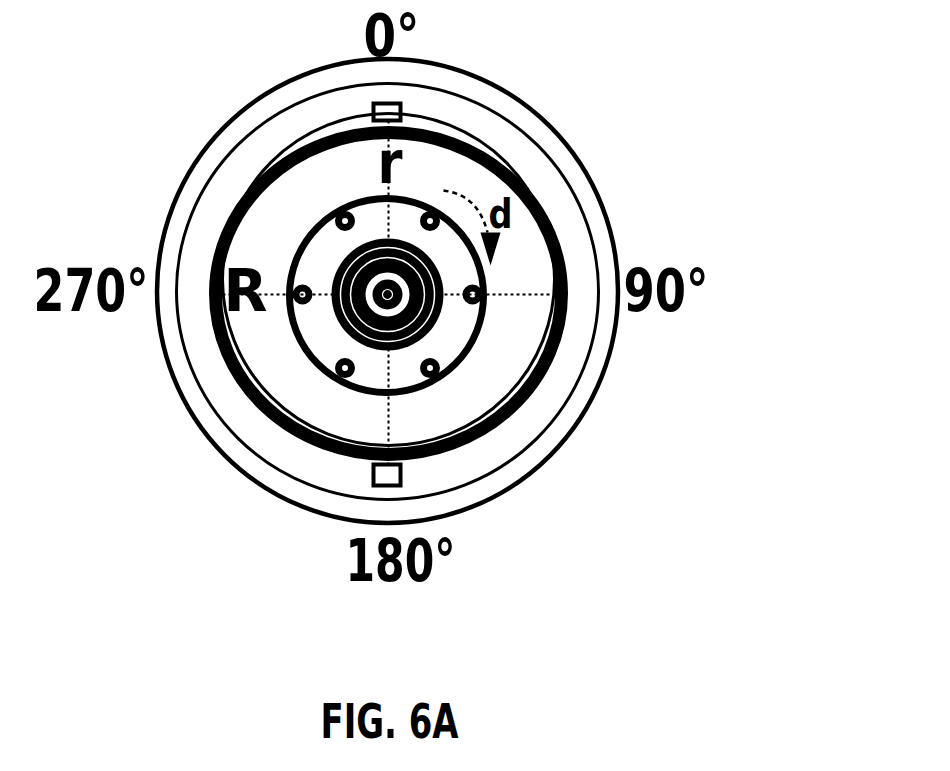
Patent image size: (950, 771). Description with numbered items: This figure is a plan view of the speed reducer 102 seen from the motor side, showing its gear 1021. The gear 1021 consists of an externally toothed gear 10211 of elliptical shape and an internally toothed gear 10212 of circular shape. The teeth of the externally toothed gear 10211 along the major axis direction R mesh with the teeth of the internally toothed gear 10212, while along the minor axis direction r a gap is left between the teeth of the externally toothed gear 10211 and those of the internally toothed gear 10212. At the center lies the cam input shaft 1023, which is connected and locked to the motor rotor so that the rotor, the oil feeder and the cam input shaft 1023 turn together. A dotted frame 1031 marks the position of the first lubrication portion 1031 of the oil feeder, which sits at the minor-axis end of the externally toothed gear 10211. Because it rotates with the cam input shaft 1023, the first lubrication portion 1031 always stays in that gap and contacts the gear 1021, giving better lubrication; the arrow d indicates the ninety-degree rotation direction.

The speed reducer 102 is at (210, 60).
The gear 1021 is at (568, 267).
The externally toothed gear 10211 is at (477, 137).
The internally toothed gear 10212 is at (423, 113).
The cam input shaft 1023 is at (507, 343).
The first lubrication portion 1031 is at (372, 113).